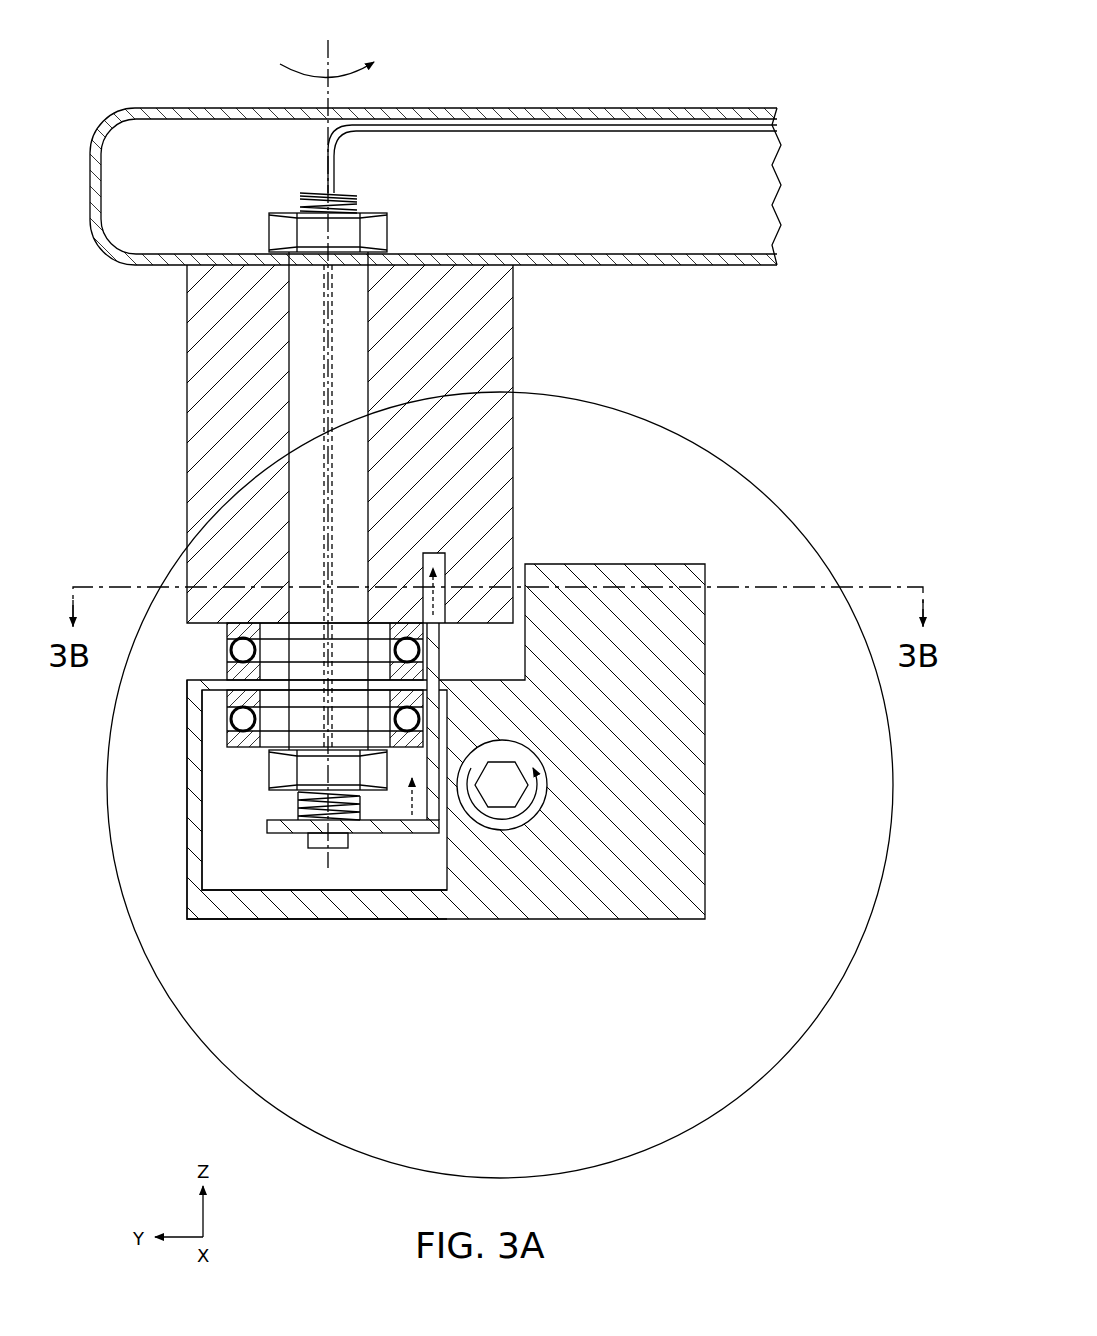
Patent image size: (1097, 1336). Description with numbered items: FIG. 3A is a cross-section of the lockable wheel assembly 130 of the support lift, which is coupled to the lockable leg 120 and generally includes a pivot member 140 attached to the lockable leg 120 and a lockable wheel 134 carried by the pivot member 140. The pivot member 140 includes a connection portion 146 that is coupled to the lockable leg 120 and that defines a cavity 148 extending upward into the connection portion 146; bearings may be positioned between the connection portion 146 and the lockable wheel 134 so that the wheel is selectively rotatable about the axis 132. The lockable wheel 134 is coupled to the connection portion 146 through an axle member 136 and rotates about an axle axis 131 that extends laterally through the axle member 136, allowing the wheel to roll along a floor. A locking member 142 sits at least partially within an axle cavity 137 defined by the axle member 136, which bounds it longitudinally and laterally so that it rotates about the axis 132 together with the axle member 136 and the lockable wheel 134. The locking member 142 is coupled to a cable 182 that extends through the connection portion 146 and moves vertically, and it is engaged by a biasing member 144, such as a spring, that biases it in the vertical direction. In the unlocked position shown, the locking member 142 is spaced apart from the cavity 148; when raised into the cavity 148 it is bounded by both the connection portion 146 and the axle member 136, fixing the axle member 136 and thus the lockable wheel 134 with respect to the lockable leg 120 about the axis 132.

The lockable leg 120 is at (186, 86).
The cable 182 is at (713, 131).
The axis 132 is at (327, 58).
The pivot member 140 is at (125, 352).
The connection portion 146 is at (187, 410).
The cavity 148 is at (446, 558).
The biasing member 144 is at (298, 815).
The locking member 142 is at (398, 834).
The lockable wheel assembly 130 is at (824, 426).
The lockable wheel 134 is at (870, 718).
The axle member 136 is at (572, 920).
The axle cavity 137 is at (297, 884).
The axle axis 131 is at (512, 778).